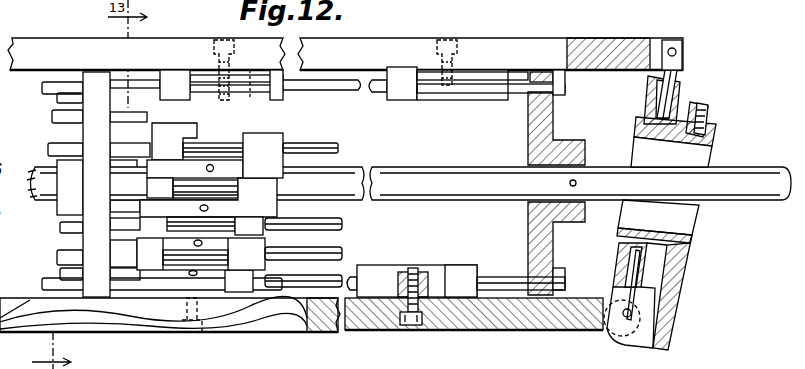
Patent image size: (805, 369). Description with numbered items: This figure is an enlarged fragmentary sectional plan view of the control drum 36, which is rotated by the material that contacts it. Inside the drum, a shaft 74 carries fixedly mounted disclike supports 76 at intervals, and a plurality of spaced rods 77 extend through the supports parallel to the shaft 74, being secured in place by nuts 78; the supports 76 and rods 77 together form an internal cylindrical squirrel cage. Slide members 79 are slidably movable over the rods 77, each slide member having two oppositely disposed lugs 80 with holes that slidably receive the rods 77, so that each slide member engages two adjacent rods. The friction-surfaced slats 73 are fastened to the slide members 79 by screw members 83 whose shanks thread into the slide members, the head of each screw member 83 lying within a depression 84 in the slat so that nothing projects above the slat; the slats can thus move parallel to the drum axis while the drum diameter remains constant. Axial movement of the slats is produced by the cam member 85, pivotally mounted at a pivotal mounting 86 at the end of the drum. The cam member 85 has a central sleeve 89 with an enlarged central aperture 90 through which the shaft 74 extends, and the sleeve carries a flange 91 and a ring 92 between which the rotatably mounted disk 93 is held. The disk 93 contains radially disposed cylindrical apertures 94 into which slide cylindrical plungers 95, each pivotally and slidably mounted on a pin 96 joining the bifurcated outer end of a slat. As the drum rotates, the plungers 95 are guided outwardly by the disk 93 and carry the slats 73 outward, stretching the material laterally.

The control drum 36 is at (599, 33).
The slats 73 is at (504, 45).
The shaft 74 is at (730, 169).
The disclike supports 76 is at (95, 127).
The rods 77 is at (320, 147).
The nuts 78 is at (560, 95).
The slide members 79 is at (288, 136).
The lugs 80 is at (176, 155).
The screw member 83 is at (452, 40).
The depression 84 is at (227, 40).
The cam member 85 is at (683, 302).
The pivotal mounting 86 is at (612, 331).
The sleeve 89 is at (688, 237).
The central aperture 90 is at (683, 213).
The flange 91 is at (647, 123).
The ring 92 is at (704, 104).
The disk 93 is at (686, 103).
The cylindrical apertures 94 is at (656, 91).
The cylindrical plungers 95 is at (677, 75).
The pin 96 is at (672, 40).